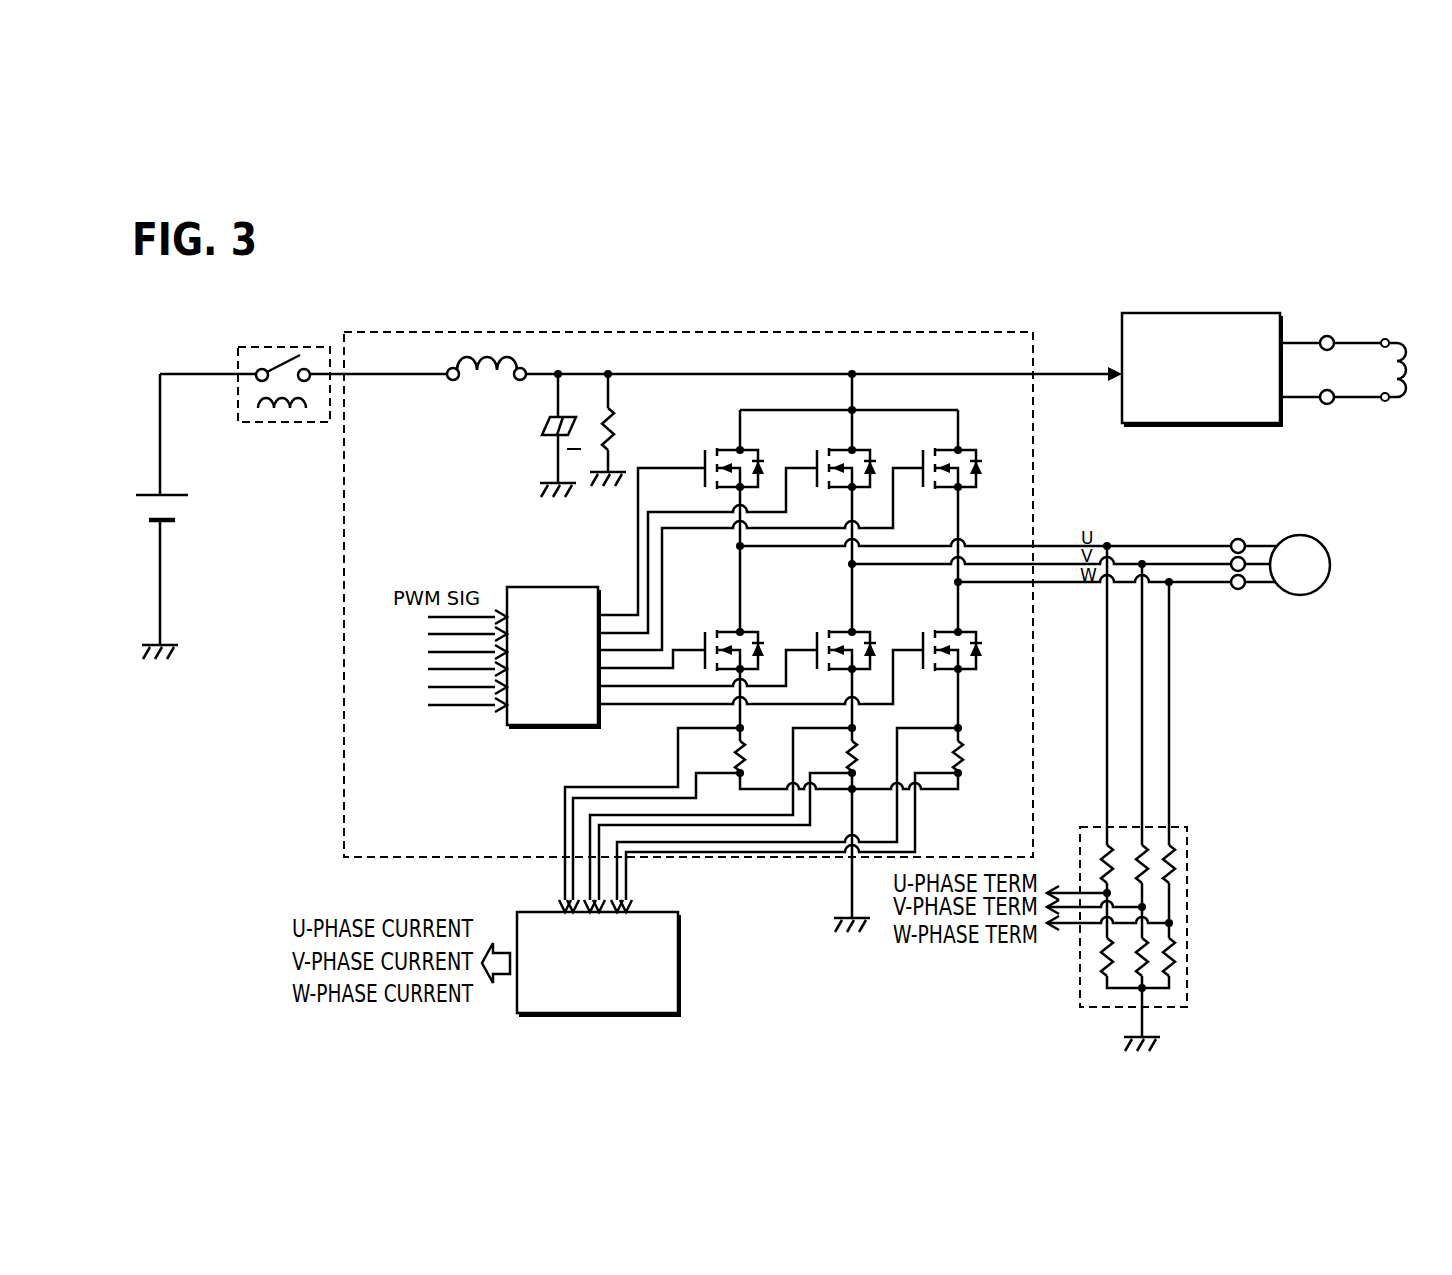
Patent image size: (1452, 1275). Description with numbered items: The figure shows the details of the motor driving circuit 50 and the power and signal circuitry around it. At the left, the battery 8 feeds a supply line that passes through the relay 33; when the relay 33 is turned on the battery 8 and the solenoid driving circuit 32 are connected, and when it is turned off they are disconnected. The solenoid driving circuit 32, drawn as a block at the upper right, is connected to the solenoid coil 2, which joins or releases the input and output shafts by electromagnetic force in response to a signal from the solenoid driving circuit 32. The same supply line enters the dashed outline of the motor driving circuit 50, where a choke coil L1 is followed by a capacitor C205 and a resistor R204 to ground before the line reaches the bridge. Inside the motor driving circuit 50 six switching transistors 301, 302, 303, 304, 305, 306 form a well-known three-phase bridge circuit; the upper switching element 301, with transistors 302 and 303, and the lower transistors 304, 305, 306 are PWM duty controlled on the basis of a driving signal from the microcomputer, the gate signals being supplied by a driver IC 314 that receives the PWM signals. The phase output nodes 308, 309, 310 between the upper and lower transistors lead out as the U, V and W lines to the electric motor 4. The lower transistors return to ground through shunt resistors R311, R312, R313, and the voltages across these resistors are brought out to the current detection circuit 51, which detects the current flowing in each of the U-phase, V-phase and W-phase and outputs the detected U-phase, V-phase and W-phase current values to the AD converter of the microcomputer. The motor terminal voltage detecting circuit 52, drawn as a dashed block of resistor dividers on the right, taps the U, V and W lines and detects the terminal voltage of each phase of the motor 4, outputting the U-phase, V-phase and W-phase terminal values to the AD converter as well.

The solenoid coil 2 is at (1406, 343).
The electric motor 4 is at (1297, 535).
The battery 8 is at (173, 494).
The solenoid driving circuit 32 is at (1210, 313).
The relay 33 is at (275, 347).
The motor driving circuit 50 is at (731, 332).
The current detection circuit 51 is at (678, 970).
The motor terminal voltage detecting circuit 52 is at (1180, 827).
The switching element 301 is at (762, 460).
The switching transistor 302 is at (874, 460).
The switching transistor 303 is at (980, 460).
The switching transistor 304 is at (762, 642).
The switching transistor 305 is at (874, 642).
The switching transistor 306 is at (980, 642).
The U phase output line 308 is at (742, 549).
The V phase output line 309 is at (854, 567).
The W phase output line 310 is at (961, 579).
The driver IC 314 is at (540, 587).
The choke coil L1 is at (470, 380).
The capacitor C205 is at (543, 428).
The resistor R204 is at (612, 421).
The U phase current detection resistor R311 is at (746, 755).
The V phase current detection resistor R312 is at (858, 755).
The W phase current detection resistor R313 is at (963, 757).